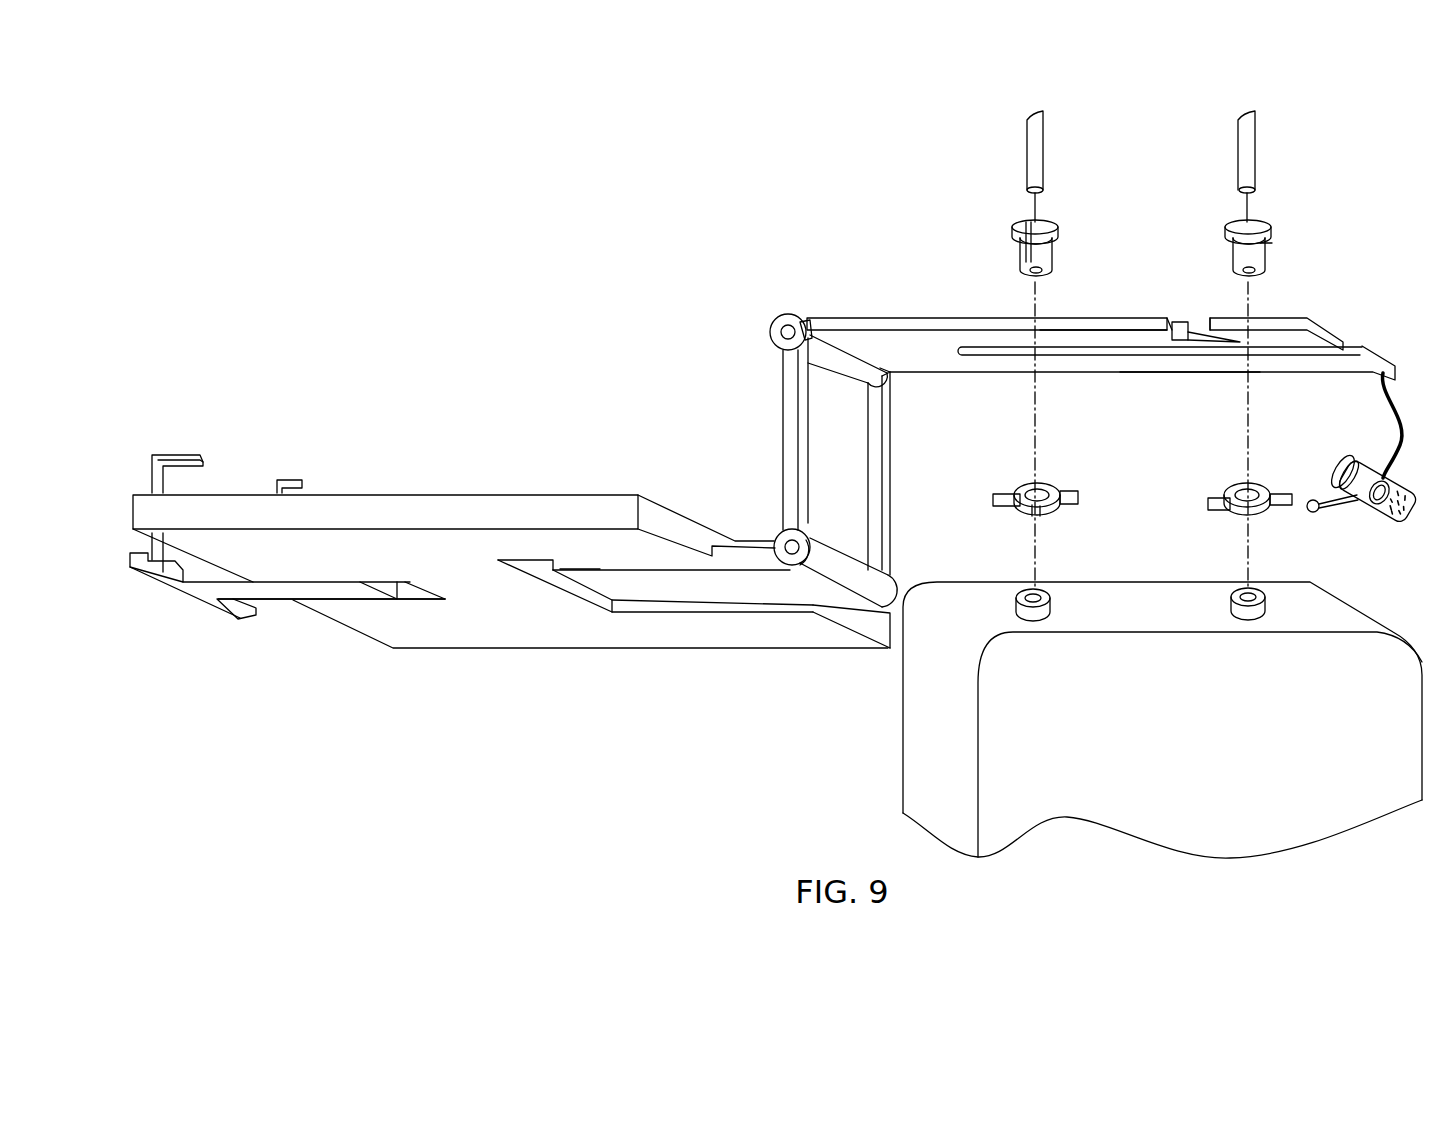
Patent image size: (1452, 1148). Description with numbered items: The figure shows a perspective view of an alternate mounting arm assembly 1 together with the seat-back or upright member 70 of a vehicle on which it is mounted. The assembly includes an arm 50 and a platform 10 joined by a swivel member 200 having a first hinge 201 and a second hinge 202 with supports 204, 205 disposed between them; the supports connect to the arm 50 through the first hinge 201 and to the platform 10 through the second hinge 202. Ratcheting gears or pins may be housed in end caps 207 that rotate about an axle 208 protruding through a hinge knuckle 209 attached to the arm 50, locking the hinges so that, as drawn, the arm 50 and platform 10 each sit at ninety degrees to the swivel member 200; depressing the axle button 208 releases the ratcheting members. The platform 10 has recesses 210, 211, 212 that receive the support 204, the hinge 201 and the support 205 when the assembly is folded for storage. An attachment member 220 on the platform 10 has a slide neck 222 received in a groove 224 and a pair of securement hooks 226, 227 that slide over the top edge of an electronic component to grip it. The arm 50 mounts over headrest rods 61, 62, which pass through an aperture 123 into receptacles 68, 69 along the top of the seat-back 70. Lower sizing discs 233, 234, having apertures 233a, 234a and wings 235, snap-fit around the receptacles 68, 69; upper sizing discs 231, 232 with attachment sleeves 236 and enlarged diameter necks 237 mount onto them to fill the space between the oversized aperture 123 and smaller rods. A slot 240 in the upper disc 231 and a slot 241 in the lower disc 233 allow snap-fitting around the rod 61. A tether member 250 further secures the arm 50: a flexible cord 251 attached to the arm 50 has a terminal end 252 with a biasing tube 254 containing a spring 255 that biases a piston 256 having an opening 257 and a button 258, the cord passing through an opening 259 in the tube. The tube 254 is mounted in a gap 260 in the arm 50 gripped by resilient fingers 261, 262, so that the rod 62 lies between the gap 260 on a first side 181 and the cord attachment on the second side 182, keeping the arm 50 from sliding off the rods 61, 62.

The mounting arm assembly 1 is at (597, 284).
The platform 10 is at (560, 660).
The arm 50 is at (868, 311).
The rod 61 is at (1032, 173).
The rod 62 is at (1243, 161).
The receptacle 68 is at (1042, 597).
The receptacle 69 is at (1258, 596).
The seat-back or upright member 70 is at (935, 770).
The aperture 123 is at (1002, 350).
The first side 181 is at (1093, 340).
The second side 182 is at (1138, 360).
The swivel member 200 is at (778, 424).
The first hinge 201 is at (845, 380).
The second hinge 202 is at (846, 540).
The support 204 is at (792, 474).
The support 205 is at (893, 500).
The end cap 207 is at (776, 322).
The axle 208 is at (789, 325).
The hinge knuckle 209 is at (880, 382).
The recess 210 is at (595, 568).
The recess 211 is at (540, 563).
The recess 212 is at (690, 606).
The attachment member 220 is at (212, 622).
The slide neck 222 is at (318, 598).
The groove 224 is at (398, 599).
The securement hook 226 is at (176, 455).
The securement hook 227 is at (291, 480).
The upper sizing disc 231 is at (1013, 250).
The upper sizing disc 232 is at (1270, 243).
The lower sizing disc 233 is at (1045, 505).
The aperture 233a is at (1030, 490).
The lower sizing disc 234 is at (1262, 508).
The aperture 234a is at (1243, 490).
The wing 235 is at (1063, 495).
The attachment sleeve 236 is at (1046, 255).
The enlarged diameter neck 237 is at (1052, 228).
The slot 240 is at (1015, 237).
The slot 241 is at (1033, 515).
The tether member 250 is at (1405, 474).
The flexible cord 251 is at (1392, 394).
The terminal end 252 is at (1328, 512).
The biasing tube 254 is at (1390, 500).
The spring 255 is at (1413, 515).
The piston 256 is at (1345, 482).
The opening 257 is at (1384, 477).
The button 258 is at (1343, 455).
The opening 259 is at (1382, 480).
The gap 260 is at (1208, 340).
The resilient finger 261 is at (1175, 326).
The resilient finger 262 is at (1205, 322).